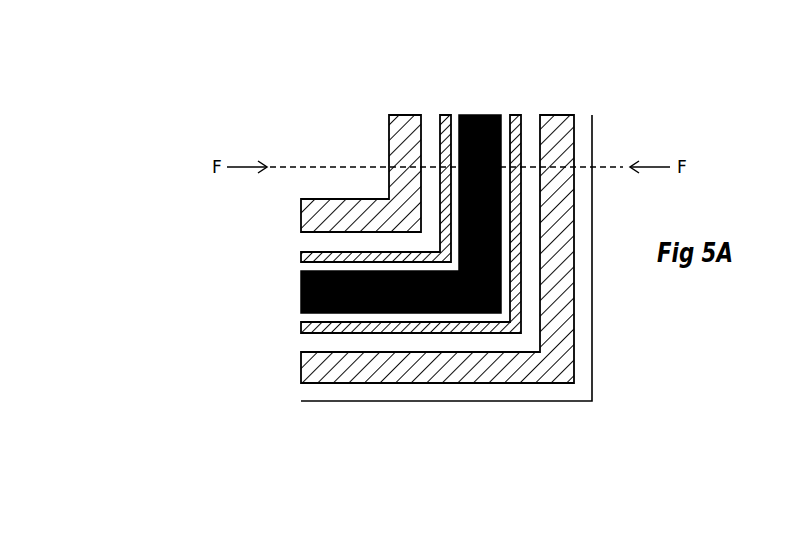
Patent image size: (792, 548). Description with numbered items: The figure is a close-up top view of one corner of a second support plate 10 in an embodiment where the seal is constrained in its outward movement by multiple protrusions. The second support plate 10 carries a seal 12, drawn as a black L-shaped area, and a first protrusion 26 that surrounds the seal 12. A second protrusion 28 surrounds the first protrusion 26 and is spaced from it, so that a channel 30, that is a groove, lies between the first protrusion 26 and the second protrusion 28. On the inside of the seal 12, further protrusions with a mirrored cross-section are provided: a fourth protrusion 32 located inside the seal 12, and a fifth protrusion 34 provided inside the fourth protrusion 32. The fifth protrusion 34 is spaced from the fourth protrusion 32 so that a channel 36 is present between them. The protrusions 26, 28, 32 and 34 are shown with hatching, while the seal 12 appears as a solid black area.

The second support plate 10 is at (573, 402).
The seal 12 is at (479, 115).
The first protrusion 26 is at (514, 115).
The second protrusion 28 is at (558, 115).
The channel 30 is at (533, 115).
The fourth protrusion 32 is at (443, 115).
The fifth protrusion 34 is at (403, 115).
The channel 36 is at (430, 115).